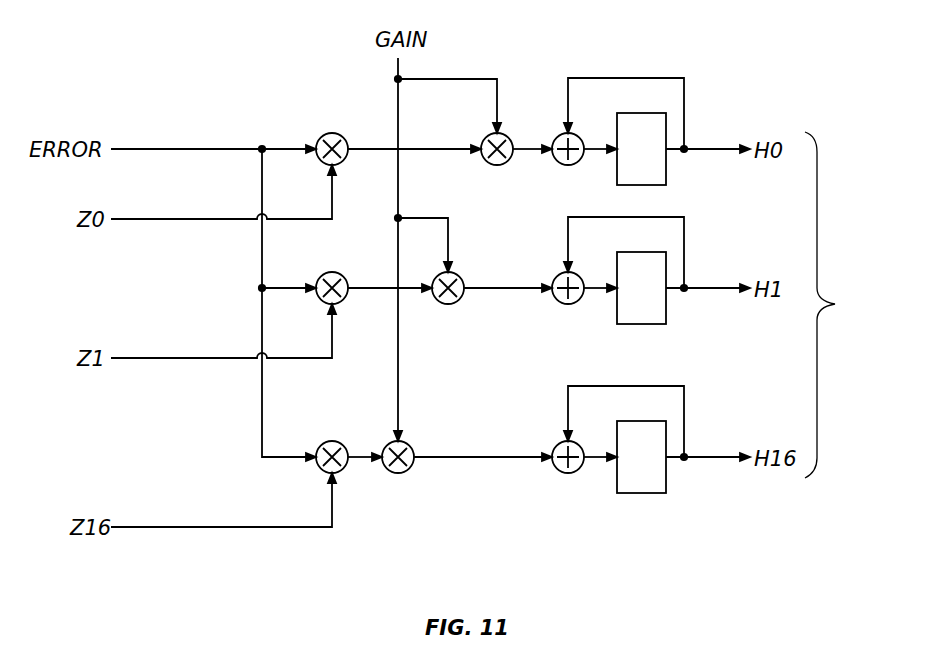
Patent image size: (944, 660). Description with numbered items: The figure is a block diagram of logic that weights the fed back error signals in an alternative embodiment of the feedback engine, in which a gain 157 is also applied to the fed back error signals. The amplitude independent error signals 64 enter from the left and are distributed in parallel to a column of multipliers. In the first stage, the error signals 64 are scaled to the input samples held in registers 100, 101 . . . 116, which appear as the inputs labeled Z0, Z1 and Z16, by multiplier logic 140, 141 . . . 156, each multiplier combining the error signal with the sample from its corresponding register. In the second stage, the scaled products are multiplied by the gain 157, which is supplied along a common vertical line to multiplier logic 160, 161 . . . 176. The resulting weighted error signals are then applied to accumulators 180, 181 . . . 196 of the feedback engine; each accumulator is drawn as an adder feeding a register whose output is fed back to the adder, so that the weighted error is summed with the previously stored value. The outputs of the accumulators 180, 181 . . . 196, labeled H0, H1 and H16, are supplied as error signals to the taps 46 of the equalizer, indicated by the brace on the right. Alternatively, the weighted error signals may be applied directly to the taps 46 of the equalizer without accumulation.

The amplitude independent error signals 64 is at (204, 146).
The register 100 is at (195, 217).
The register 101 is at (195, 357).
The register 116 is at (195, 526).
The logic 140 is at (321, 137).
The logic 141 is at (321, 276).
The logic 156 is at (321, 445).
The gain 157 is at (401, 71).
The logic 160 is at (487, 137).
The logic 161 is at (459, 277).
The logic 176 is at (409, 446).
The accumulator 180 is at (695, 89).
The accumulator 181 is at (695, 241).
The accumulator 196 is at (695, 416).
The taps 46 is at (835, 305).